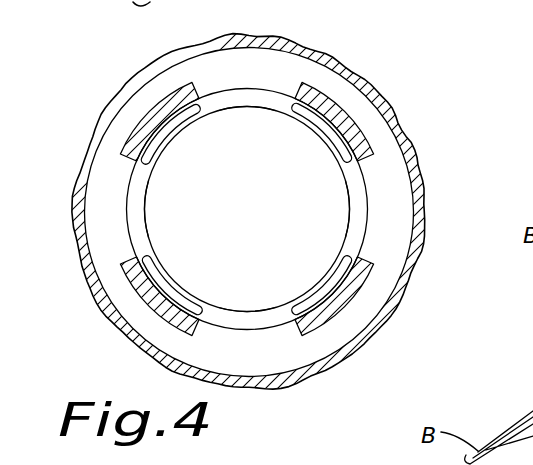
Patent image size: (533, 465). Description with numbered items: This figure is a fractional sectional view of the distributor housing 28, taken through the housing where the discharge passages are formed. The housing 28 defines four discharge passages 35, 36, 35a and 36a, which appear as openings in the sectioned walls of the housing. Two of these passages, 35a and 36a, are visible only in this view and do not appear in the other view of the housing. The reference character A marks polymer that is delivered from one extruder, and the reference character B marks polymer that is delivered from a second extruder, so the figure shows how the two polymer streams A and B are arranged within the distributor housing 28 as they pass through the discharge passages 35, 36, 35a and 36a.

The distributor housing 28 is at (387, 107).
The discharge passage 35 is at (263, 72).
The discharge passage 35a is at (263, 342).
The discharge passage 36 is at (383, 193).
The discharge passage 36a is at (113, 190).
The polymer from the first extruder A is at (173, 130).
The polymer from the second extruder B is at (241, 102).